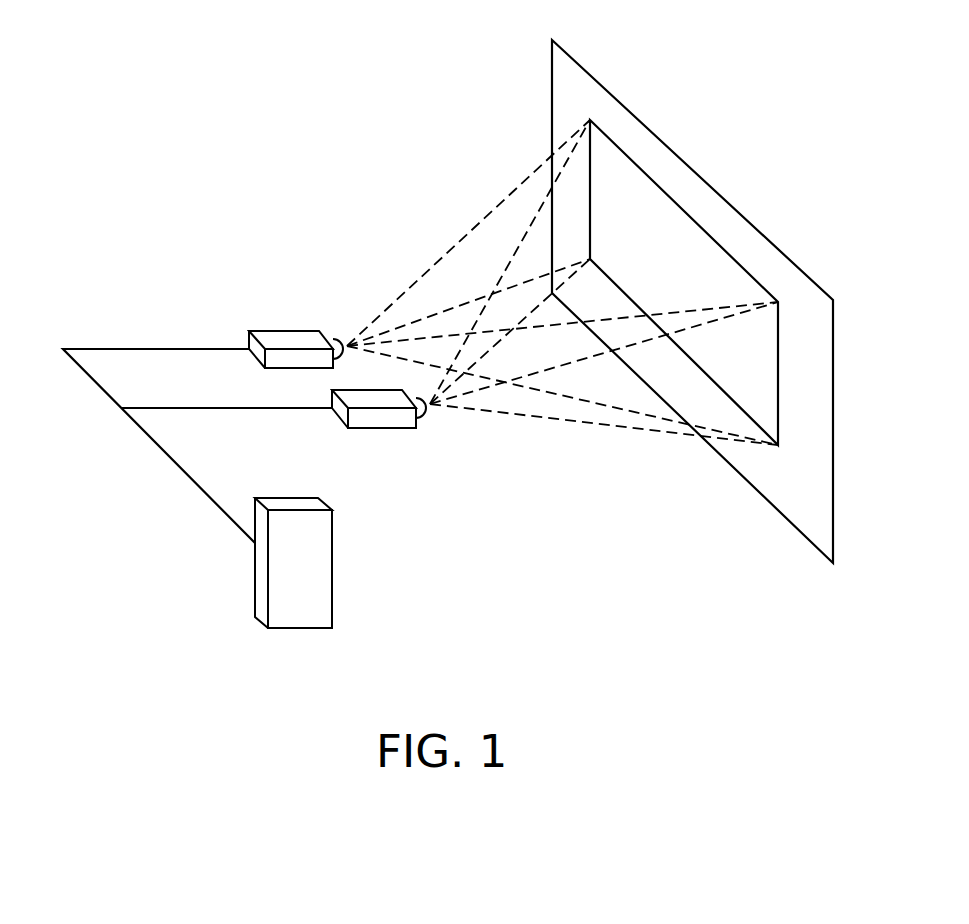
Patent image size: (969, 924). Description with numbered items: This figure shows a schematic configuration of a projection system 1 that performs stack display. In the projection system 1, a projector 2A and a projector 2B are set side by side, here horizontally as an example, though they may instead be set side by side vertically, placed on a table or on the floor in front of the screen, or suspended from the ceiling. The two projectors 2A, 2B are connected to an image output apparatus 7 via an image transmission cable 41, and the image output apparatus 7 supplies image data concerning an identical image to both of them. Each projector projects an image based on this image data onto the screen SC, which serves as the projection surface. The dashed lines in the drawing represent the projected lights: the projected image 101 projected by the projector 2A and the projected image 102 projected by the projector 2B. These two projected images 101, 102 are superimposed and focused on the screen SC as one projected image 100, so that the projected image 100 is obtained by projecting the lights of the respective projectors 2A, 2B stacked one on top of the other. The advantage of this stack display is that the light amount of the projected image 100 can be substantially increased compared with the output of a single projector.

The projection system 1 is at (355, 177).
The projector 2A is at (298, 336).
The projector 2B is at (360, 410).
The image output apparatus 7 is at (333, 574).
The image transmission cable 41 is at (112, 400).
The projected image 100 is at (728, 246).
The projected image 101 is at (483, 260).
The projected image 102 is at (534, 403).
The screen SC is at (600, 83).